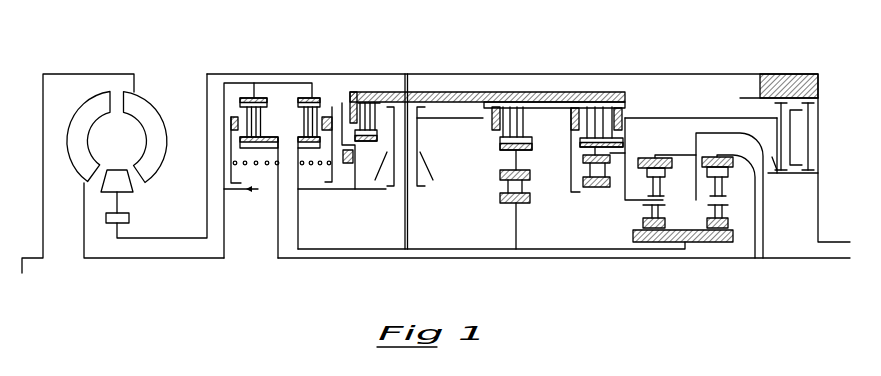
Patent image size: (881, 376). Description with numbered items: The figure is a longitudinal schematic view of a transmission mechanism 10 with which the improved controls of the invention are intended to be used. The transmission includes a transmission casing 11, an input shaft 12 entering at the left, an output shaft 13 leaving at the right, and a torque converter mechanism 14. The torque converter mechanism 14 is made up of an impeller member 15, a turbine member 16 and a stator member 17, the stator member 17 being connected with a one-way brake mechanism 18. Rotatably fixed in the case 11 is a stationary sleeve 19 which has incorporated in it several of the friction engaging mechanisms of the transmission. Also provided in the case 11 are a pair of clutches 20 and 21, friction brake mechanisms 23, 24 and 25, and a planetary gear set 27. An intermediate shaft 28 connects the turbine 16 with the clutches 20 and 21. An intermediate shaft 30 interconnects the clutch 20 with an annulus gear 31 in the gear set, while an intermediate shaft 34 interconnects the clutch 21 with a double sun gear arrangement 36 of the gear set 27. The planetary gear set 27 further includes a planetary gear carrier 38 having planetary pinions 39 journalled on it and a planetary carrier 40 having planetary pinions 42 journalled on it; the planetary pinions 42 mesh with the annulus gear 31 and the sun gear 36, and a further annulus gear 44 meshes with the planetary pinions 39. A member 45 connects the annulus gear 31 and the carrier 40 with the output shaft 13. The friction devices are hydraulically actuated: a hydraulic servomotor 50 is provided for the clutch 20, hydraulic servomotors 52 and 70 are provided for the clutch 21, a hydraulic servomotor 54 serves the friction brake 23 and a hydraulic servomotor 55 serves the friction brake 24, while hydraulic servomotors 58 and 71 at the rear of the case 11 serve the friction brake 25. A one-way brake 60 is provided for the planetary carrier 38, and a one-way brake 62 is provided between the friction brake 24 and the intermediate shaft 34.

The transmission mechanism 10 is at (509, 46).
The transmission casing 11 is at (634, 74).
The input shaft 12 is at (22, 273).
The output shaft 13 is at (828, 260).
The torque converter mechanism 14 is at (123, 133).
The impeller member 15 is at (163, 119).
The turbine member 16 is at (84, 117).
The stator member 17 is at (121, 174).
The one-way brake mechanism 18 is at (130, 218).
The stationary sleeve 19 is at (448, 92).
The clutch 20 is at (263, 96).
The clutch 21 is at (318, 96).
The friction brake mechanism 23 is at (369, 91).
The friction brake mechanism 24 is at (528, 100).
The friction brake mechanism 25 is at (588, 100).
The planetary gear set 27 is at (675, 146).
The intermediate shaft 28 is at (183, 259).
The intermediate shaft 30 is at (455, 259).
The annulus gear 31 is at (723, 185).
The intermediate shaft 34 is at (421, 249).
The double sun gear arrangement 36 is at (699, 243).
The planetary gear carrier 38 is at (623, 200).
The planetary pinions 39 is at (663, 187).
The planetary carrier 40 is at (669, 214).
The planetary pinions 42 is at (725, 214).
The annulus gear 44 is at (656, 160).
The member 45 is at (735, 132).
The hydraulic servomotor 50 is at (224, 152).
The hydraulic servomotor 52 is at (341, 102).
The hydraulic servomotor 54 is at (398, 184).
The hydraulic servomotor 55 is at (411, 181).
The hydraulic servomotor 58 is at (798, 133).
The one-way brake 60 is at (581, 174).
The one-way brake 62 is at (499, 185).
The hydraulic servomotor 70 is at (357, 178).
The hydraulic servomotor 71 is at (819, 156).